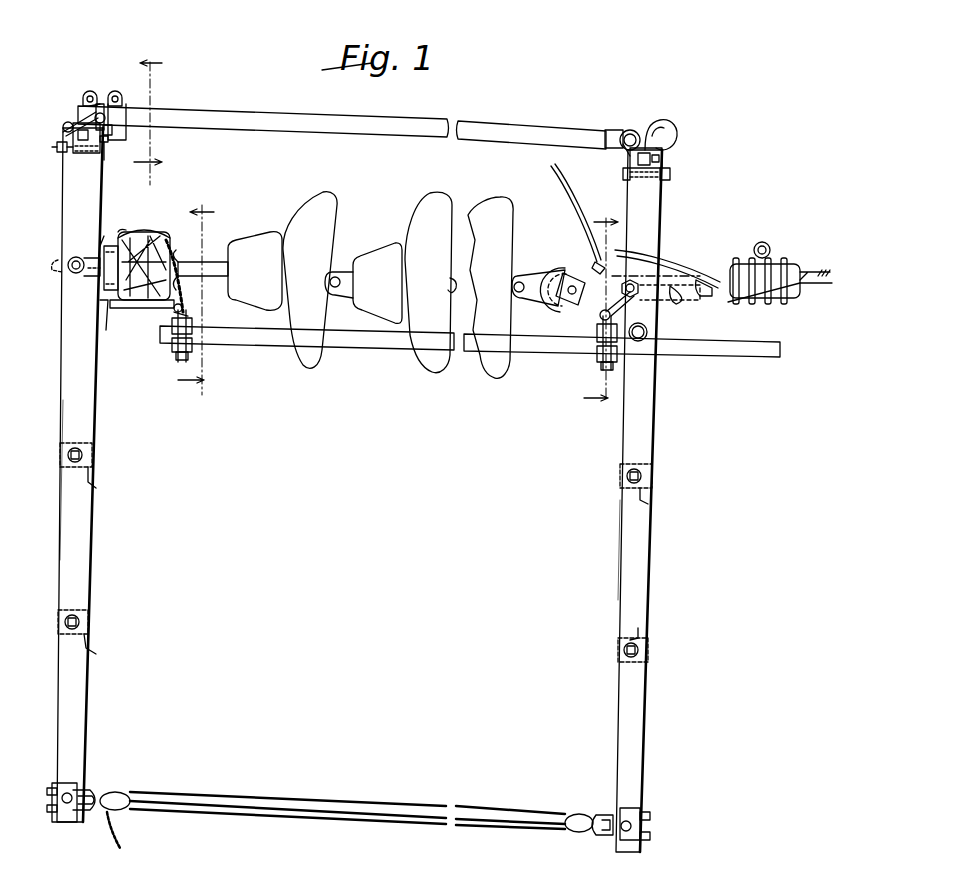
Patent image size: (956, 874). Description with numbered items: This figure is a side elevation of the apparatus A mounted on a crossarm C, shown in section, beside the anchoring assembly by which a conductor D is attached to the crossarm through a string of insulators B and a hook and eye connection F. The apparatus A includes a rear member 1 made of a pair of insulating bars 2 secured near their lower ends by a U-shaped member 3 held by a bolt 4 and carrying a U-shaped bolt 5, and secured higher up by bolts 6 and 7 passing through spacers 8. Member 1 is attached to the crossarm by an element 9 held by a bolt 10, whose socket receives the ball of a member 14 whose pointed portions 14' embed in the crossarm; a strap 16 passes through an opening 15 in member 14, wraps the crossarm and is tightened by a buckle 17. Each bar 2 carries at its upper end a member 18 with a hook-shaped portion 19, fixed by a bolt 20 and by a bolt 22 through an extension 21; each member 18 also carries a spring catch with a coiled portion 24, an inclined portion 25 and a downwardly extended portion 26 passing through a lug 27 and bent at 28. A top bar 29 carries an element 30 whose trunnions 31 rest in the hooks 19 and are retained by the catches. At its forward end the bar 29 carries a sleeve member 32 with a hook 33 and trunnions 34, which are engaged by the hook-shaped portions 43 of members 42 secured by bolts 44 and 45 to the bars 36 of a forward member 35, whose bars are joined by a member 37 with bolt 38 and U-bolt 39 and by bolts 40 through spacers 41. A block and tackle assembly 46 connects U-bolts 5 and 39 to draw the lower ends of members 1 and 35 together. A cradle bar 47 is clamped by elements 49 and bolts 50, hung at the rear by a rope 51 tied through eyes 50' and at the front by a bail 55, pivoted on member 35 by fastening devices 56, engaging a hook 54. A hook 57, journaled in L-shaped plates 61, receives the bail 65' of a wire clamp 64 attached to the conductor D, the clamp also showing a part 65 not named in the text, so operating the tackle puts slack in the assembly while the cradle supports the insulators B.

The member 1 is at (102, 580).
The bars 2 is at (85, 546).
The member 3 is at (56, 822).
The bolt 4 is at (86, 790).
The U-shaped bolt 5 is at (86, 832).
The bolt 6 is at (80, 622).
The bolt 7 is at (82, 455).
The spacers 8 is at (96, 488).
The element 9 is at (60, 278).
The bolt 10 is at (70, 258).
The member 14 is at (95, 258).
The pointed portions 14' is at (103, 266).
The opening 15 is at (100, 282).
The strap 16 is at (120, 232).
The buckle 17 is at (140, 308).
The member 18 is at (58, 152).
The hook-shaped portion 19 is at (132, 80).
The bolt 20 is at (82, 145).
The extension 21 is at (66, 152).
The bolt 22 is at (106, 145).
The coiled portion 24 is at (62, 128).
The portion 25 is at (70, 115).
The downwardly extended portion 26 is at (112, 131).
The lug 27 is at (104, 142).
The bent portion 28 is at (104, 155).
The bar 29 is at (282, 117).
The element 30 is at (90, 92).
The trunnions 31 is at (100, 112).
The sleeve member 32 is at (612, 130).
The hook 33 is at (678, 136).
The trunnions 34 is at (636, 132).
The member 35 is at (661, 569).
The bars 36 is at (622, 585).
The member 37 is at (636, 808).
The bolt 38 is at (631, 826).
The U-bolt 39 is at (606, 814).
The bolts 40 is at (641, 476).
The spacers 41 is at (648, 504).
The members 42 is at (662, 158).
The hook-shaped portions 43 is at (620, 150).
The bolt 44 is at (623, 178).
The bolt 45 is at (670, 174).
The block and tackle assembly 46 is at (380, 803).
The bar 47 is at (368, 343).
The elements 49 is at (172, 345).
The bolts 50 is at (170, 375).
The eyes 50' is at (165, 314).
The flexible element 51 is at (170, 240).
The hook 54 is at (617, 340).
The bail 55 is at (645, 338).
The fastening devices 56 is at (680, 305).
The hook 57 is at (640, 300).
The L-shaped plates 61 is at (640, 280).
The wire clamp 64 is at (770, 260).
The operating rod 65 is at (603, 219).
The bail 65' is at (689, 315).
The apparatus A is at (662, 200).
The insulators B is at (330, 221).
The crossarm C is at (144, 251).
The conductor D is at (800, 285).
The hook and eye connection F is at (188, 262).